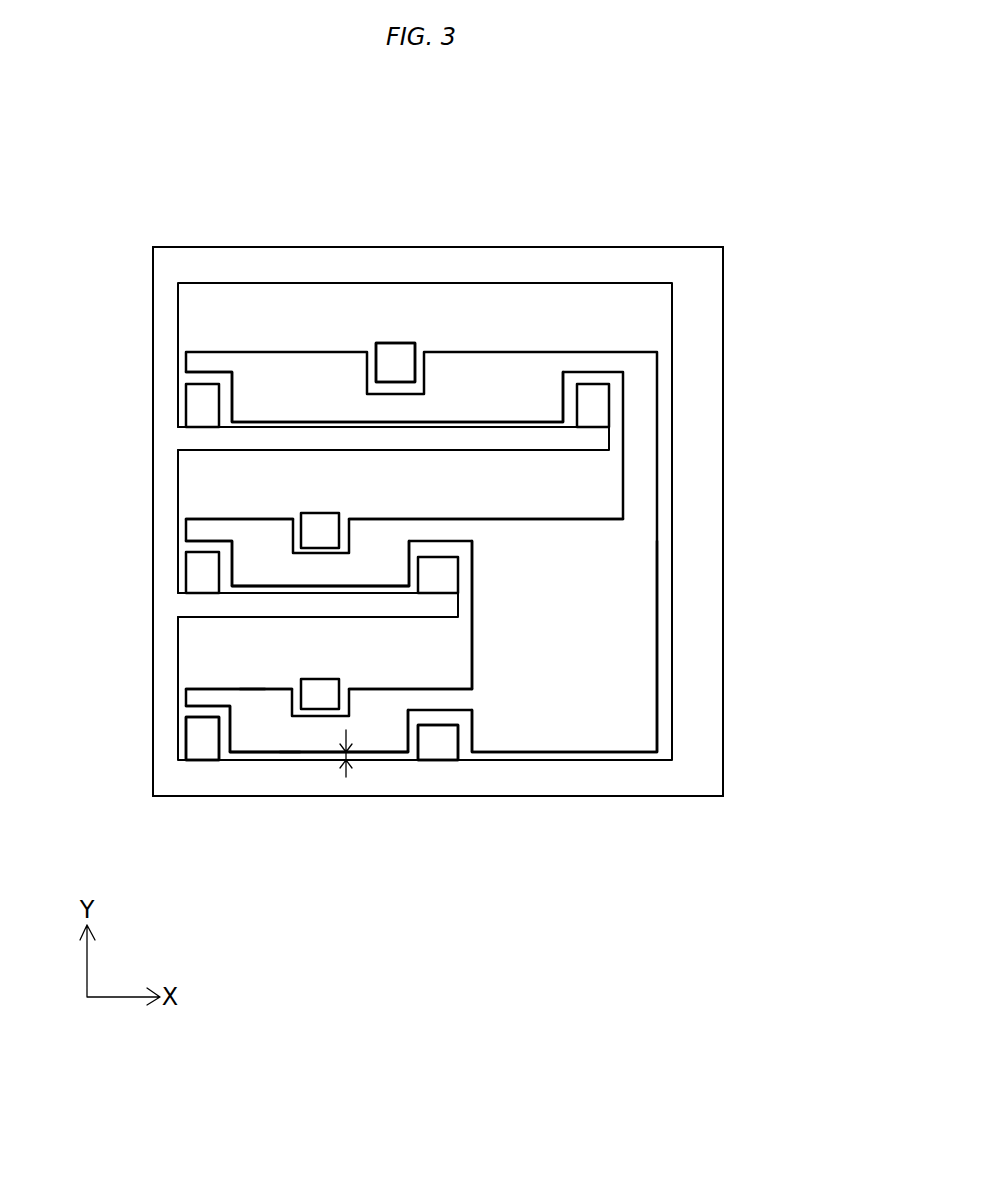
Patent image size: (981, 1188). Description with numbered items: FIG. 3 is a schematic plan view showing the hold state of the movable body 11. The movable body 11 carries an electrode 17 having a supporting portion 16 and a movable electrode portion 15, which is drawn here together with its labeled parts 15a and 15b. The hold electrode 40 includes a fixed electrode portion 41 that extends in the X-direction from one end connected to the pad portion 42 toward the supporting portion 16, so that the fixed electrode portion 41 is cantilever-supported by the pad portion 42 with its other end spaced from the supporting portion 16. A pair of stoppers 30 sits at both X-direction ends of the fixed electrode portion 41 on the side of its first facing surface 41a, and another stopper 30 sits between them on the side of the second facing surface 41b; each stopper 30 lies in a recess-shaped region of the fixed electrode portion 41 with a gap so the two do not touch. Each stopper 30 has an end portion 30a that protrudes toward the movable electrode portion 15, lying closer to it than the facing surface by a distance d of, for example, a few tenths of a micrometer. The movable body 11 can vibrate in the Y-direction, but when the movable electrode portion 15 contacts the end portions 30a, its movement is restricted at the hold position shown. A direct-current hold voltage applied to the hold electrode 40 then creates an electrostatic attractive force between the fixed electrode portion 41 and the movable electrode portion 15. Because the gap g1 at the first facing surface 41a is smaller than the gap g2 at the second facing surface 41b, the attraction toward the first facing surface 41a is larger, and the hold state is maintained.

The movable body 11 is at (697, 825).
The movable electrode portion 15 is at (376, 522).
The first insulating layer portion 15a is at (311, 273).
The second insulating layer portion 15b is at (483, 437).
The supporting portion 16 is at (162, 322).
The electrode 17 is at (700, 243).
The stopper 30 is at (397, 365).
The end portion 30a is at (385, 343).
The hold electrode 40 is at (549, 348).
The fixed electrode portion 41 is at (258, 362).
The first facing surface 41a is at (293, 588).
The second facing surface 41b is at (234, 520).
The pad portion 42 is at (603, 652).
The gap g1 is at (292, 752).
The gap g2 is at (252, 654).
The distance d is at (346, 777).